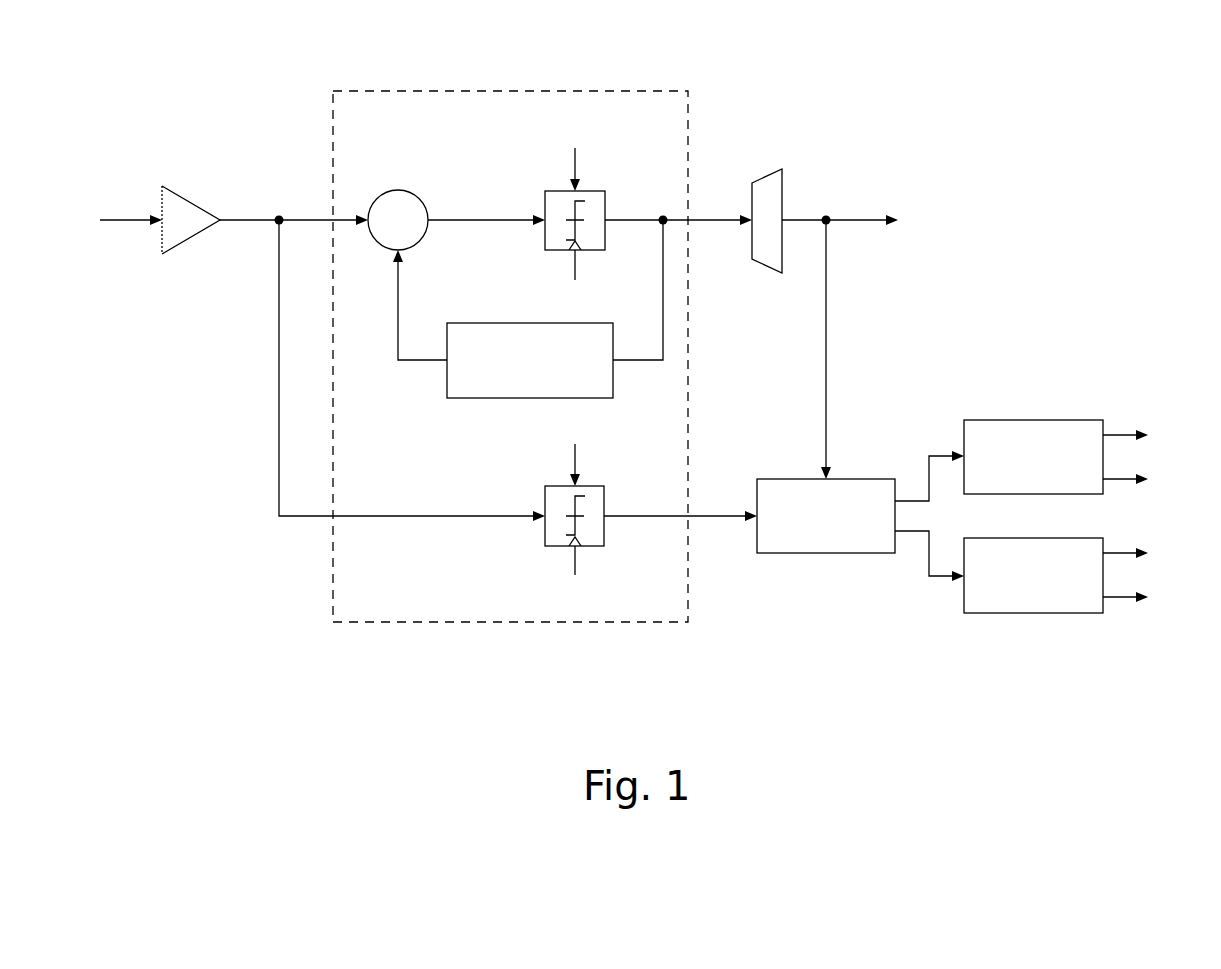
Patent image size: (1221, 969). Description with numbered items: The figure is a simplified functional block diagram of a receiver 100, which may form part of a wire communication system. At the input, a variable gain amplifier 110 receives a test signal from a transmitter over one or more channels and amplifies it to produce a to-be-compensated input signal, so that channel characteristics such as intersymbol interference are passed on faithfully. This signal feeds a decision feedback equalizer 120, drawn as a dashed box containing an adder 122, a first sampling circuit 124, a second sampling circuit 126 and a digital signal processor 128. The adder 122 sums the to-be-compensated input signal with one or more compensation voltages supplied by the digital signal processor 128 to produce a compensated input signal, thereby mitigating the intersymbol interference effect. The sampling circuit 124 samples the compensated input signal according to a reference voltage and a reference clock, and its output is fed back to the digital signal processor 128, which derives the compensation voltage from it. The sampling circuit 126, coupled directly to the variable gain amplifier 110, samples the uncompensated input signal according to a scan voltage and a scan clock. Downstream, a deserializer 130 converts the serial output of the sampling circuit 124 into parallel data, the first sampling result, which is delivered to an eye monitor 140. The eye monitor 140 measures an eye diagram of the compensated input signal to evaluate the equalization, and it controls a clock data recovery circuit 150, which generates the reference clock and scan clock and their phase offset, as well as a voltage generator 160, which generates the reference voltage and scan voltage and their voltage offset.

The receiver 100 is at (1053, 84).
The variable gain amplifier 110 is at (190, 198).
The decision feedback equalizer 120 is at (560, 91).
The adder 122 is at (420, 196).
The sampling circuit 124 is at (604, 191).
The sampling circuit 126 is at (604, 486).
The digital signal processor 128 is at (478, 323).
The deserializer 130 is at (754, 180).
The eye monitor 140 is at (765, 479).
The clock data recovery circuit 150 is at (996, 613).
The voltage generator 160 is at (1003, 420).